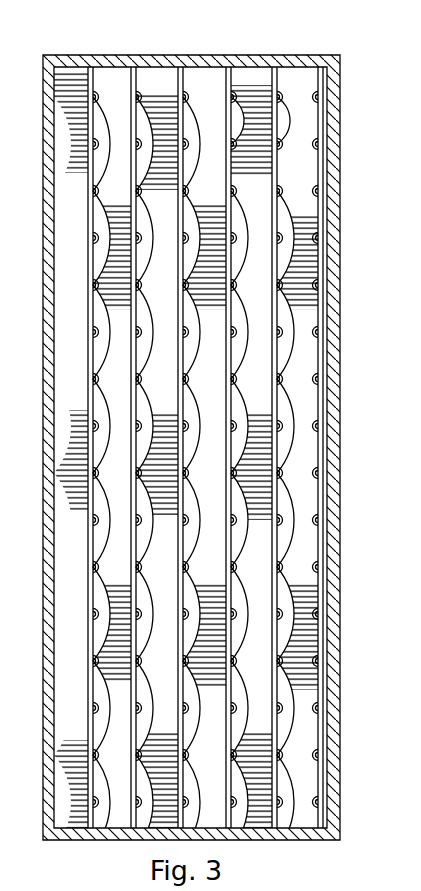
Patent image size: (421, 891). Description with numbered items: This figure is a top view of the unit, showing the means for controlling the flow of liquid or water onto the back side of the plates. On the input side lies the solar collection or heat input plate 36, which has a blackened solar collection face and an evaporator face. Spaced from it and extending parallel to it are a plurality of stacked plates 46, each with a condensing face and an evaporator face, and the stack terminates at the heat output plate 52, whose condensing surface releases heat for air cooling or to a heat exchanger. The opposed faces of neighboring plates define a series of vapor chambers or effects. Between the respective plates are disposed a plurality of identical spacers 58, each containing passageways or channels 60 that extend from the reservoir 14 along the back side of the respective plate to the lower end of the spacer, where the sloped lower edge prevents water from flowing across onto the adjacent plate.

The reservoir 14 is at (333, 266).
The heat input plate 36 is at (88, 209).
The plate 46 is at (177, 224).
The heat output plate 52 is at (318, 400).
The spacer 58 is at (155, 80).
The passageway or channel 60 is at (243, 405).